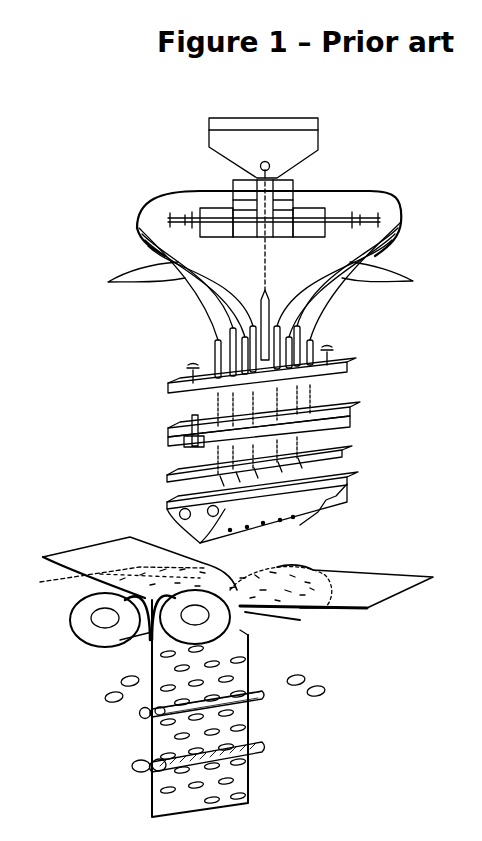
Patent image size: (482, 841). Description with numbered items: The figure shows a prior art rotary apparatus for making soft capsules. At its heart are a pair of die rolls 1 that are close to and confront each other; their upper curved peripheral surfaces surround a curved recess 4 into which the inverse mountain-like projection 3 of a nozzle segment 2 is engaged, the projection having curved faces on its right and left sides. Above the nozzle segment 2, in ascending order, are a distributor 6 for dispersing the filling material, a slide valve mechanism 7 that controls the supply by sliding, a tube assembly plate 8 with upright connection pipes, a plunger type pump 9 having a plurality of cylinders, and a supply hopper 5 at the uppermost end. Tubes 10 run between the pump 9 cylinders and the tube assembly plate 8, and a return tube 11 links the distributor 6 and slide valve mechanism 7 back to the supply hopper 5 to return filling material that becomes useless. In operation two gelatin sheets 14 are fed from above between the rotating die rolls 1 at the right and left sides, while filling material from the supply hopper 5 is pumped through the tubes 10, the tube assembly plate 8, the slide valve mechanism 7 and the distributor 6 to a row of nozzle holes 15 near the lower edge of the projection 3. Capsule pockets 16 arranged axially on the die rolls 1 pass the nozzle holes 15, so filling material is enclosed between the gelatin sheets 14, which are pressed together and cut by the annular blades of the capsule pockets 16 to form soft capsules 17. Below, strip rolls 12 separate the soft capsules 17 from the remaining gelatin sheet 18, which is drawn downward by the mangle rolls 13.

The die rolls 1 is at (70, 622).
The nozzle segment 2 is at (352, 482).
The inverse mountain-like projection 3 is at (333, 502).
The curved recess 4 is at (246, 578).
The supply hopper 5 is at (208, 140).
The distributor 6 is at (172, 476).
The slide valve mechanism 7 is at (172, 430).
The tube assembly plate 8 is at (172, 384).
The plunger type pump 9 is at (334, 203).
The tubes 10 is at (112, 282).
The return tube 11 is at (285, 303).
The strip rolls 12 is at (150, 718).
The mangle rolls 13 is at (150, 775).
The gelatin sheets 14 is at (100, 548).
The nozzle holes 15 is at (288, 522).
The capsule pockets 16 is at (60, 580).
The soft capsules 17 is at (105, 697).
The remaining gelatin sheet 18 is at (250, 728).